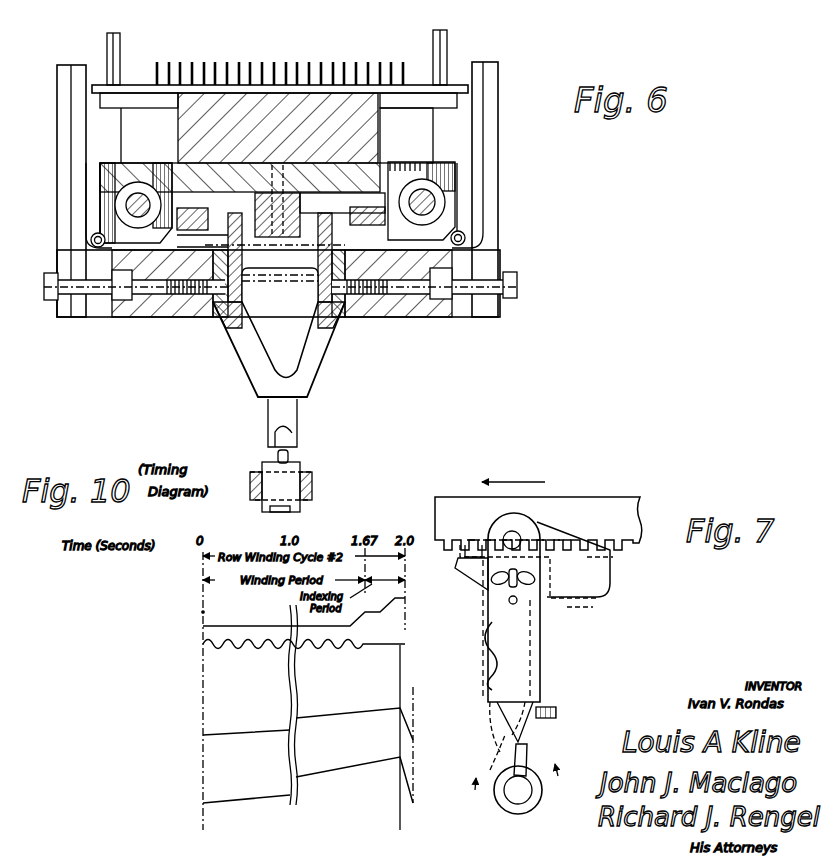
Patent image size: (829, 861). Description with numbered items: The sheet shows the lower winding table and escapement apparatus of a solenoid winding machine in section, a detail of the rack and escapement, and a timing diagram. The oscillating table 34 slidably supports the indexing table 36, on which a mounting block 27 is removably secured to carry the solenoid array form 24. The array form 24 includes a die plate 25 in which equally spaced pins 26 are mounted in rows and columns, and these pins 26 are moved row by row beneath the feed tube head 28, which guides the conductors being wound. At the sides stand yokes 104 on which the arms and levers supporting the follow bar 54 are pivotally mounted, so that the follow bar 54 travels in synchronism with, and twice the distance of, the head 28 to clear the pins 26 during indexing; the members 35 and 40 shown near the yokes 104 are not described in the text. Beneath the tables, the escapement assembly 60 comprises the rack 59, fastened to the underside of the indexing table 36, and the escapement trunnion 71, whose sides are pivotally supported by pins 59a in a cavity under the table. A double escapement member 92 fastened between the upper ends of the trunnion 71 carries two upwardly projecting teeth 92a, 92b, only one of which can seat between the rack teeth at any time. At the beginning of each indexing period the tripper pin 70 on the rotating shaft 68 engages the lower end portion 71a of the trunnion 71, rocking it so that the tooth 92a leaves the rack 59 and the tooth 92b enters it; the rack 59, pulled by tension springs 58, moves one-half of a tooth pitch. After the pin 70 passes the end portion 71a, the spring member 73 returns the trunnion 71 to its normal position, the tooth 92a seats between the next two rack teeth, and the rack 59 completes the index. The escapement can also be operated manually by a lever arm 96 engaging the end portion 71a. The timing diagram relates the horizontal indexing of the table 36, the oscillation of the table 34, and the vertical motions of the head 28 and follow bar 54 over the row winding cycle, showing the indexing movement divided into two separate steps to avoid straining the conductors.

In FIG. 6, the solenoid array form 24 is at (314, 58).
In FIG. 6, the die plate 25 is at (462, 75).
In FIG. 6, the pins 26 is at (205, 66).
In FIG. 6, the mounting block 27 is at (278, 142).
In FIG. 10, the feed tube head 28 is at (225, 715).
In FIG. 6, the oscillating table 34 is at (135, 320).
In FIG. 10, the oscillating table 34 is at (216, 664).
In FIG. 6, the guide post 35 is at (124, 46).
In FIG. 6, the indexing table 36 is at (460, 165).
In FIG. 10, the indexing table 36 is at (219, 615).
In FIG. 6, the roller 40 is at (140, 200).
In FIG. 10, the follow bar 54 is at (226, 776).
In FIG. 6, the tension springs 58 is at (90, 240).
In FIG. 6, the rack 59 is at (260, 212).
In FIG. 7, the rack 59 is at (538, 523).
In FIG. 6, the pins 59a is at (255, 245).
In FIG. 7, the pins 59a is at (521, 536).
In FIG. 6, the escapement assembly 60 is at (330, 372).
In FIG. 7, the escapement assembly 60 is at (572, 618).
In FIG. 7, the shaft 68 is at (512, 805).
In FIG. 6, the tripper pin 70 is at (290, 462).
In FIG. 7, the tripper pin 70 is at (530, 762).
In FIG. 6, the escapement trunnion 71 is at (258, 352).
In FIG. 7, the escapement trunnion 71 is at (511, 607).
In FIG. 6, the lower end portion 71a is at (278, 440).
In FIG. 7, the lower end portion 71a is at (530, 708).
In FIG. 7, the spring member 73 is at (482, 655).
In FIG. 6, the double escapement member 92 is at (308, 270).
In FIG. 7, the double escapement member 92 is at (484, 574).
In FIG. 7, the tooth 92a is at (610, 557).
In FIG. 7, the tooth 92b is at (475, 545).
In FIG. 7, the lever arm 96 is at (557, 713).
In FIG. 6, the yokes 104 is at (72, 236).